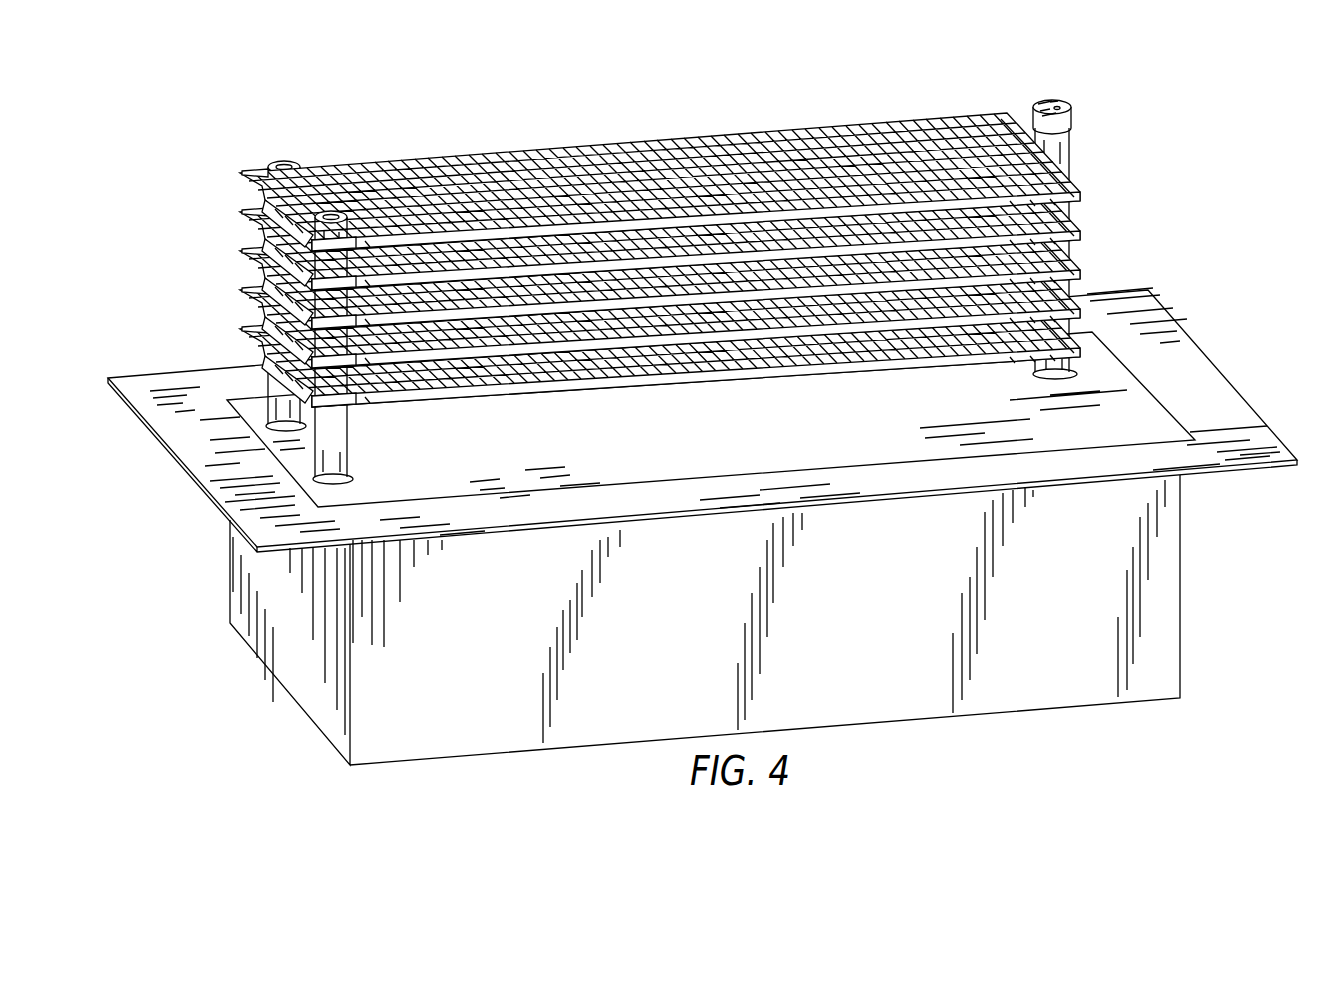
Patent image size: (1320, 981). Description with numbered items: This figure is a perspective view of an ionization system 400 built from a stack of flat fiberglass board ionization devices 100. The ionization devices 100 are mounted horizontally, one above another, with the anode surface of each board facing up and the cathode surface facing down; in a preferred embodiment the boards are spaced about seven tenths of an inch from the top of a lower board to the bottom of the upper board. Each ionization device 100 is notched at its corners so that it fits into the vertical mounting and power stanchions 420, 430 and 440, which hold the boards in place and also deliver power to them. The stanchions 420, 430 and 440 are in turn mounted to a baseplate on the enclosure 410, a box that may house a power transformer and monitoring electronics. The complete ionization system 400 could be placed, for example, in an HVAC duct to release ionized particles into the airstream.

The ionization system 400 is at (314, 88).
The ionization device 100 is at (808, 118).
The enclosure 410 is at (198, 515).
The mounting and power stanchion 420 is at (331, 213).
The mounting and power stanchion 430 is at (283, 160).
The mounting and power stanchion 440 is at (1055, 96).